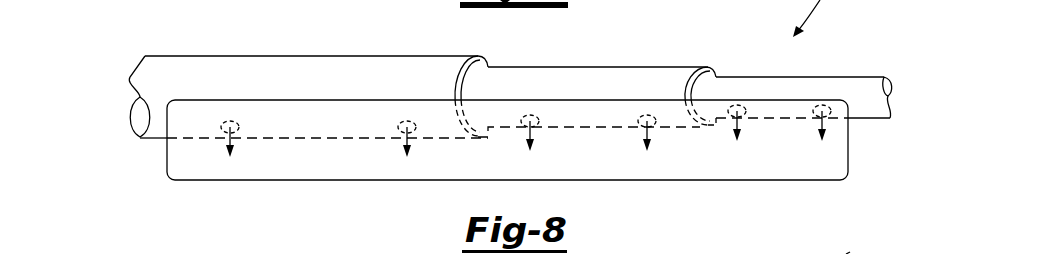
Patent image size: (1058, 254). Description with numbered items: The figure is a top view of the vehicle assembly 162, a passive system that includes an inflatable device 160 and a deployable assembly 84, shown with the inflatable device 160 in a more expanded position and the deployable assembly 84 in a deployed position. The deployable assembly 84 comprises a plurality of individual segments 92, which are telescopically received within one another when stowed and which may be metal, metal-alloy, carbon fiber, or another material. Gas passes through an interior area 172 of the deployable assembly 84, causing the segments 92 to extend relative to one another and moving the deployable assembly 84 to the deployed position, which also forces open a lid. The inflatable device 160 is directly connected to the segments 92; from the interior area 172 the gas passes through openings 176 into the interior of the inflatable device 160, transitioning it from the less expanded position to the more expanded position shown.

The interior area 172 is at (118, 63).
The segments 92 is at (213, 67).
The deployable assembly 84 is at (855, 75).
The inflatable device 160 is at (848, 147).
The openings 176 is at (238, 110).
The vehicle assembly 162 is at (848, 253).